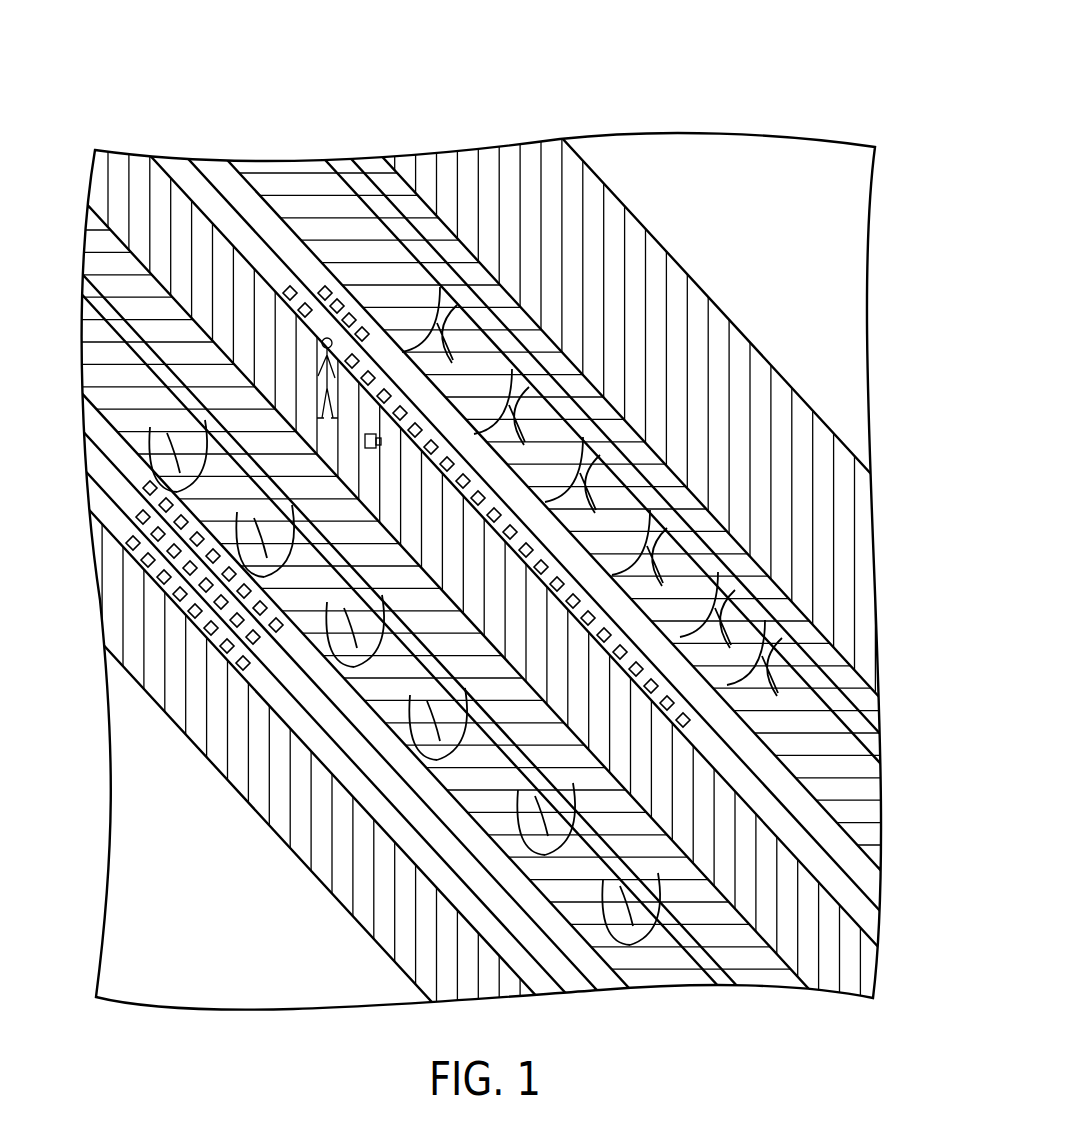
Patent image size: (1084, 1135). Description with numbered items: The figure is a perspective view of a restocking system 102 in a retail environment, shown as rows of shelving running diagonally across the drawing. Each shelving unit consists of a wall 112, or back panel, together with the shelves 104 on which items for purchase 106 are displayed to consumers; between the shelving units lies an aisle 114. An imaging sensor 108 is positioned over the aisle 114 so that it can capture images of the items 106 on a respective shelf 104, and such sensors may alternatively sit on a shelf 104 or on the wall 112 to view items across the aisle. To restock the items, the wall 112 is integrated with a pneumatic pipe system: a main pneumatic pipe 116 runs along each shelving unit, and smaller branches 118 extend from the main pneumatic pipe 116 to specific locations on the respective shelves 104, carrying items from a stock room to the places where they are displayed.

The restocking system 102 is at (695, 85).
The shelf 104 is at (417, 827).
The items for purchase 106 is at (322, 292).
The imaging sensor 108 is at (363, 442).
The wall 112 is at (288, 178).
The aisle 114 is at (122, 182).
The main pneumatic pipe 116 is at (357, 178).
The branches 118 is at (126, 415).